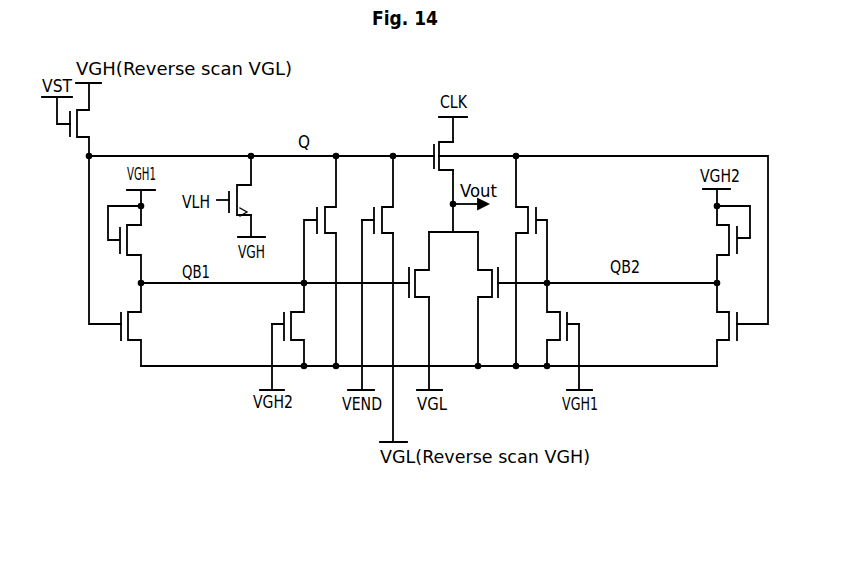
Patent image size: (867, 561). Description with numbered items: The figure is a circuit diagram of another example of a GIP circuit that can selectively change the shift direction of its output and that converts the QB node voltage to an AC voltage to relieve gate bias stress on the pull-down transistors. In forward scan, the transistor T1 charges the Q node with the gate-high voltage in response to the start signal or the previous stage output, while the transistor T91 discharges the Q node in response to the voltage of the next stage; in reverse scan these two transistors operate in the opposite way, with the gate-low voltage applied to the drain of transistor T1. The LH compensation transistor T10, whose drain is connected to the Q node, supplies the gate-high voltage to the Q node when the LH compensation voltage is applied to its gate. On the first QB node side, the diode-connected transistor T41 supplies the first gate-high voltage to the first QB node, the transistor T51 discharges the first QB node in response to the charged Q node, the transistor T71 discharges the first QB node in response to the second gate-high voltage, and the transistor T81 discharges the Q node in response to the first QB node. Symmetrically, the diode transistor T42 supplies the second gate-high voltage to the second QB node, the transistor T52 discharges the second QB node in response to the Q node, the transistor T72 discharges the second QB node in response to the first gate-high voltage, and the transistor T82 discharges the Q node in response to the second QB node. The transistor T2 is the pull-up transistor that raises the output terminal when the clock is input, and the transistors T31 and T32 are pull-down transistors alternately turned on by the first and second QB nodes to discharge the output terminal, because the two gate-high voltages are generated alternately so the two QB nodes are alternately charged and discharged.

The TFT 1 T1 is at (87, 133).
The TFT 2 T2 is at (455, 151).
The LH compensation TFT T10 is at (252, 186).
The TFT 31 T31 is at (428, 264).
The TFT 32 T32 is at (477, 299).
The TFT 41 T41 is at (135, 244).
The TFT 42 T42 is at (724, 244).
The TFT 51 T51 is at (141, 324).
The TFT 52 T52 is at (718, 324).
The TFT 71 T71 is at (298, 324).
The TFT 72 T72 is at (552, 324).
The TFT 81 T81 is at (329, 261).
The TFT 82 T82 is at (521, 261).
The TFT 91 T91 is at (387, 194).